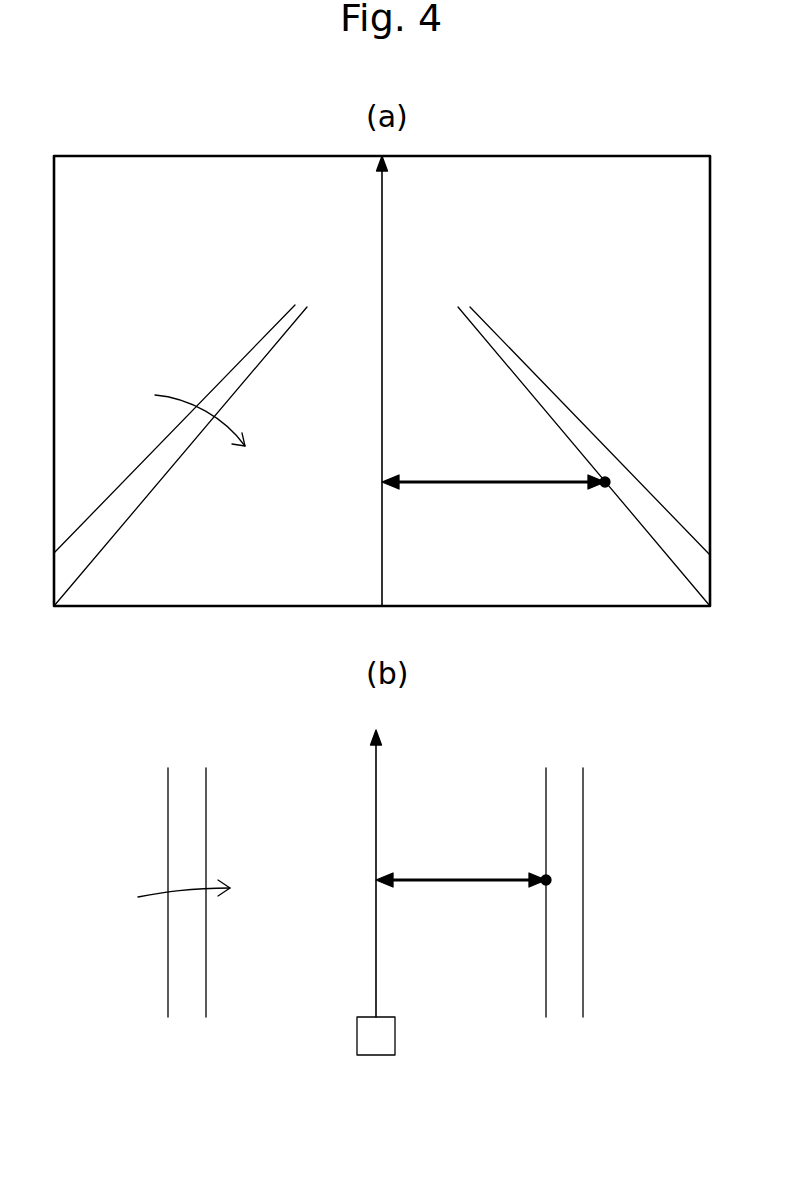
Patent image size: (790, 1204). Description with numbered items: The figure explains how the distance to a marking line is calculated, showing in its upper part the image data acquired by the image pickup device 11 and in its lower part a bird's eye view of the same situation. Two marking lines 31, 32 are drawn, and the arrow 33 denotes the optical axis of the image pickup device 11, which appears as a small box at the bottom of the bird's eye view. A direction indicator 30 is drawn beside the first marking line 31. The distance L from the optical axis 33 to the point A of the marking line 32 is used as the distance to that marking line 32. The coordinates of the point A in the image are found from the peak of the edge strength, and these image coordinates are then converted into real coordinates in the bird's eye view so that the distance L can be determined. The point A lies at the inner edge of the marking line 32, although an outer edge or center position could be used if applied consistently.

The image pickup device 11 is at (395, 1033).
The traveling direction 30 is at (182, 412).
The marking line 31 is at (250, 353).
The marking line 32 is at (518, 353).
The arrow denoting optical axis 33 is at (382, 222).
The distance L is at (481, 479).
The point of the marking line A is at (610, 480).